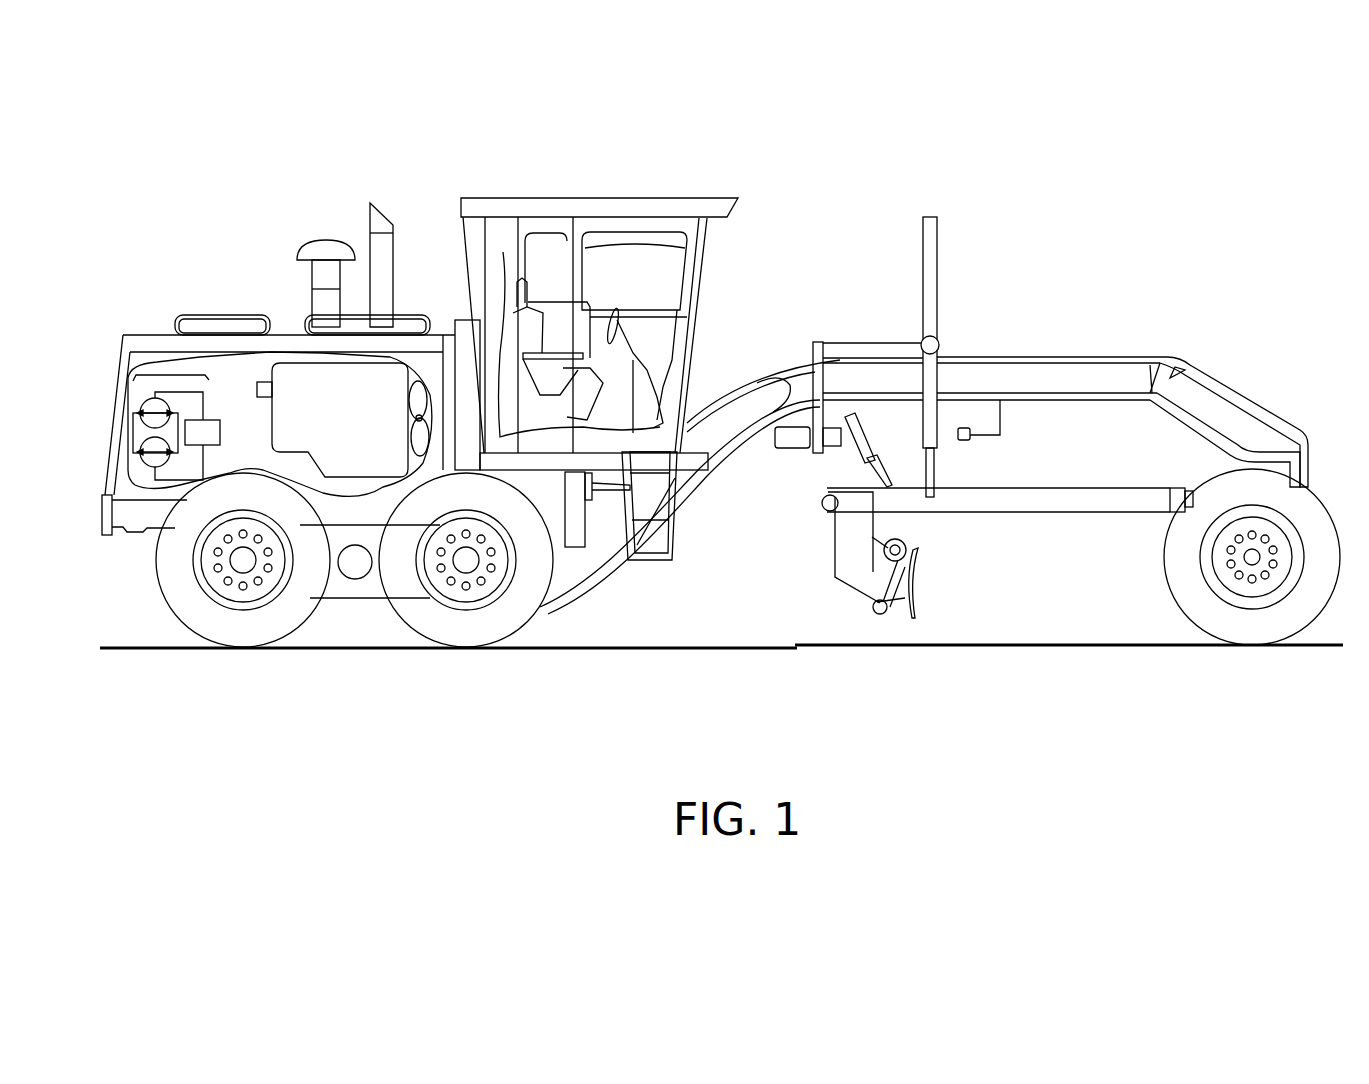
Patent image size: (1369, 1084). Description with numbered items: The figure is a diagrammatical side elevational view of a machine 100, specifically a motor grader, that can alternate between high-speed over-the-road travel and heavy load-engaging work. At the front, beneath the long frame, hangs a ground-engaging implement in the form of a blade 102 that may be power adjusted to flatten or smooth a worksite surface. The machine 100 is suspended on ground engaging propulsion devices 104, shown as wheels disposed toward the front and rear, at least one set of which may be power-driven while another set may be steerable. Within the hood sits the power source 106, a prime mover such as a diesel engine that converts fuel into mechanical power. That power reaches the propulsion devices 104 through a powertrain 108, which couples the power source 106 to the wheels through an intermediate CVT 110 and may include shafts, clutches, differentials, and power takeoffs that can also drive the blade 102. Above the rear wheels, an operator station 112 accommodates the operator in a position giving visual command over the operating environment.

The machine 100 is at (778, 191).
The blade 102 is at (912, 578).
The ground engaging propulsion devices 104 is at (466, 620).
The power source 106 is at (313, 387).
The powertrain 108 is at (170, 374).
The CVT 110 is at (130, 428).
The operator station 112 is at (579, 207).